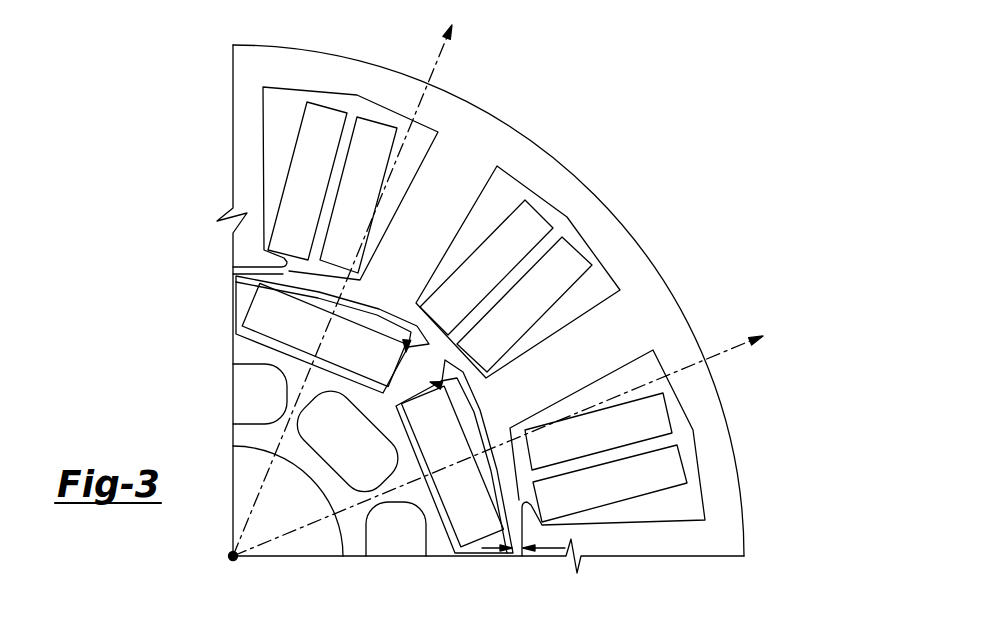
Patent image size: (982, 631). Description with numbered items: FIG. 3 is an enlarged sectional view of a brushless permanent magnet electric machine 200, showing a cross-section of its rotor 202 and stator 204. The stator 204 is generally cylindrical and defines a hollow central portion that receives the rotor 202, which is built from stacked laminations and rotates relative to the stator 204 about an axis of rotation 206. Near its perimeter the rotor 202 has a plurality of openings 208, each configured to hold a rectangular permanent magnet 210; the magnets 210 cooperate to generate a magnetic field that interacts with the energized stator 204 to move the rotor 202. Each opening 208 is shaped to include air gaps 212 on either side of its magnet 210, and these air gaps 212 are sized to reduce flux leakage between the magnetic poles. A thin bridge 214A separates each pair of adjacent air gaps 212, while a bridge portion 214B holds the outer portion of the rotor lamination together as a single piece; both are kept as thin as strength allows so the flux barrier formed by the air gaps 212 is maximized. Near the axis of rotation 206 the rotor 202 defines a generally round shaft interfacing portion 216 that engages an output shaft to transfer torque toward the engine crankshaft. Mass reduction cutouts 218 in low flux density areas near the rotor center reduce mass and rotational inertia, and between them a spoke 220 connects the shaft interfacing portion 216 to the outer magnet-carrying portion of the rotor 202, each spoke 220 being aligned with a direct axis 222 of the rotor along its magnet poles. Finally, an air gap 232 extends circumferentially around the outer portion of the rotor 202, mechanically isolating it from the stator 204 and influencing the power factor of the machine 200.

The electric machine 200 is at (632, 103).
The rotor 202 is at (250, 352).
The stator 204 is at (739, 483).
The axis of rotation 206 is at (228, 554).
The openings 208 is at (368, 328).
The permanent magnet 210 is at (298, 337).
The air gaps 212 is at (407, 342).
The bridge 214A is at (458, 337).
The bridge portion 214B is at (452, 322).
The shaft interfacing portion 216 is at (313, 484).
The mass reduction cutouts 218 is at (264, 408).
The spoke 220 is at (282, 432).
The direct axis 222 is at (430, 68).
The air gap 232 is at (548, 549).